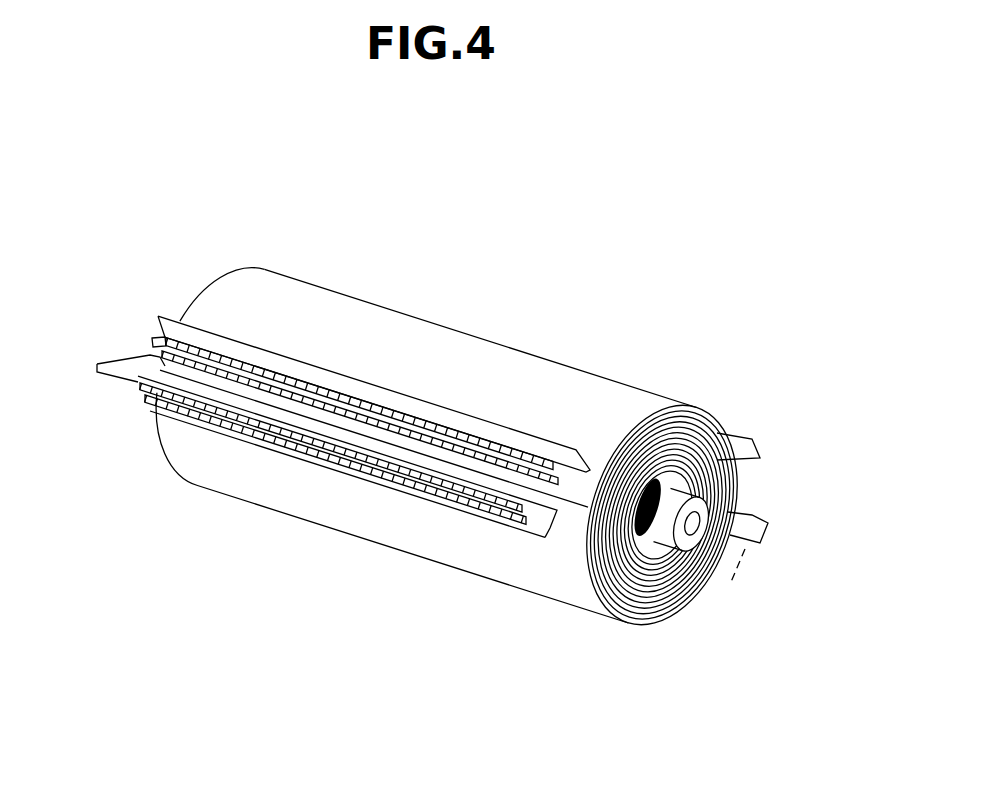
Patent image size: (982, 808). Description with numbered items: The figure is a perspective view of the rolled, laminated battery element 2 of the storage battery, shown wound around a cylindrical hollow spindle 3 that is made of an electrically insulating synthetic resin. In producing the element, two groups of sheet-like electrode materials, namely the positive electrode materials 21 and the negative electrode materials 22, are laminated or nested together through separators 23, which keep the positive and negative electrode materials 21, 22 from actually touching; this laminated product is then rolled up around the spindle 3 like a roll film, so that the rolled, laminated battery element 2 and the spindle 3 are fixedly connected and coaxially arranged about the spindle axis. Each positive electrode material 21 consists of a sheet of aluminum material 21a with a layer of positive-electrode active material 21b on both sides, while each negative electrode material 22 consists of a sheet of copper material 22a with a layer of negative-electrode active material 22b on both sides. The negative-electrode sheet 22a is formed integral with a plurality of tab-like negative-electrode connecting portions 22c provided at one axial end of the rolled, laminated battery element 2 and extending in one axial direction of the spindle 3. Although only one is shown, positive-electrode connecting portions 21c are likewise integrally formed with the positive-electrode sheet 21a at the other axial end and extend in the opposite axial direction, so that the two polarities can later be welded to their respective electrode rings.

The rolled, laminated battery element 2 is at (403, 318).
The cylindrical hollow spindle 3 is at (668, 537).
The positive electrode material 21 is at (537, 632).
The sheet of aluminum material 21a is at (520, 512).
The layer of positive-electrode active material 21b is at (444, 479).
The positive-electrode connecting portion 21c is at (115, 362).
The negative electrode material 22 is at (607, 308).
The sheet of copper material 22a is at (556, 455).
The layer of negative-electrode active material 22b is at (470, 434).
The negative-electrode connecting portion 22c is at (758, 512).
The separator 23 is at (188, 318).